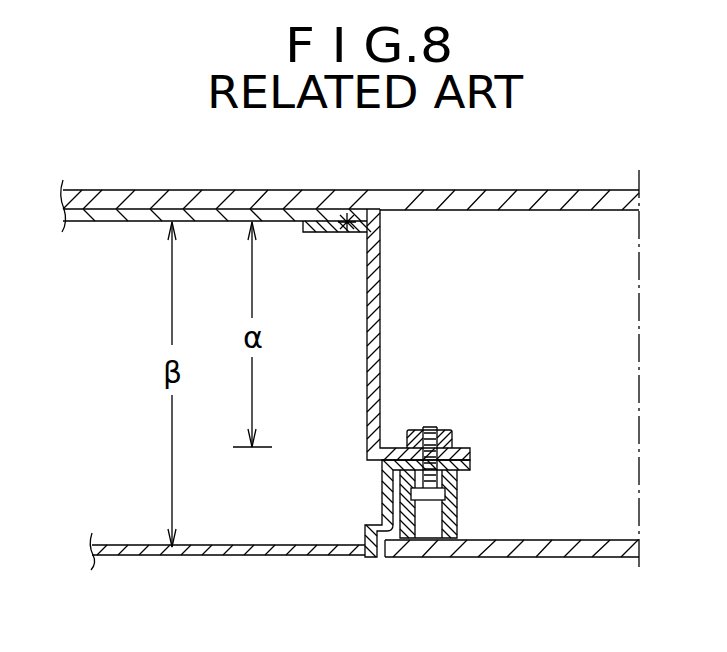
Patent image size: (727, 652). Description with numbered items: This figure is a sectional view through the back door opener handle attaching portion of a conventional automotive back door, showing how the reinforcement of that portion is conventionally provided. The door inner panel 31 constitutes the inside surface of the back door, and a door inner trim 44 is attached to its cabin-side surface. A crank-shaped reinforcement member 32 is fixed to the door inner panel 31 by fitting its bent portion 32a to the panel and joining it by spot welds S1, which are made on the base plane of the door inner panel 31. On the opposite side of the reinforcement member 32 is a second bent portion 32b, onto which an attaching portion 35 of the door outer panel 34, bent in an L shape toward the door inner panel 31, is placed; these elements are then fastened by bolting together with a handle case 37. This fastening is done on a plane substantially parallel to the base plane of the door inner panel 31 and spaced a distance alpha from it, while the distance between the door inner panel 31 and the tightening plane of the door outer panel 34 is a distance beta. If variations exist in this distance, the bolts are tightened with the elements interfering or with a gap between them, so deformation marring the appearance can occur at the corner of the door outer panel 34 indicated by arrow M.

The door inner panel 31 is at (205, 193).
The door inner trim 44 is at (473, 193).
The spot weld S1 is at (352, 214).
The reinforcement member 32 is at (380, 343).
The bent portion 32a is at (332, 234).
The bent portion 32b is at (458, 452).
The attaching portion 35 is at (382, 477).
The door outer panel 34 is at (263, 558).
The handle case 37 is at (505, 553).
The arrow M is at (363, 558).